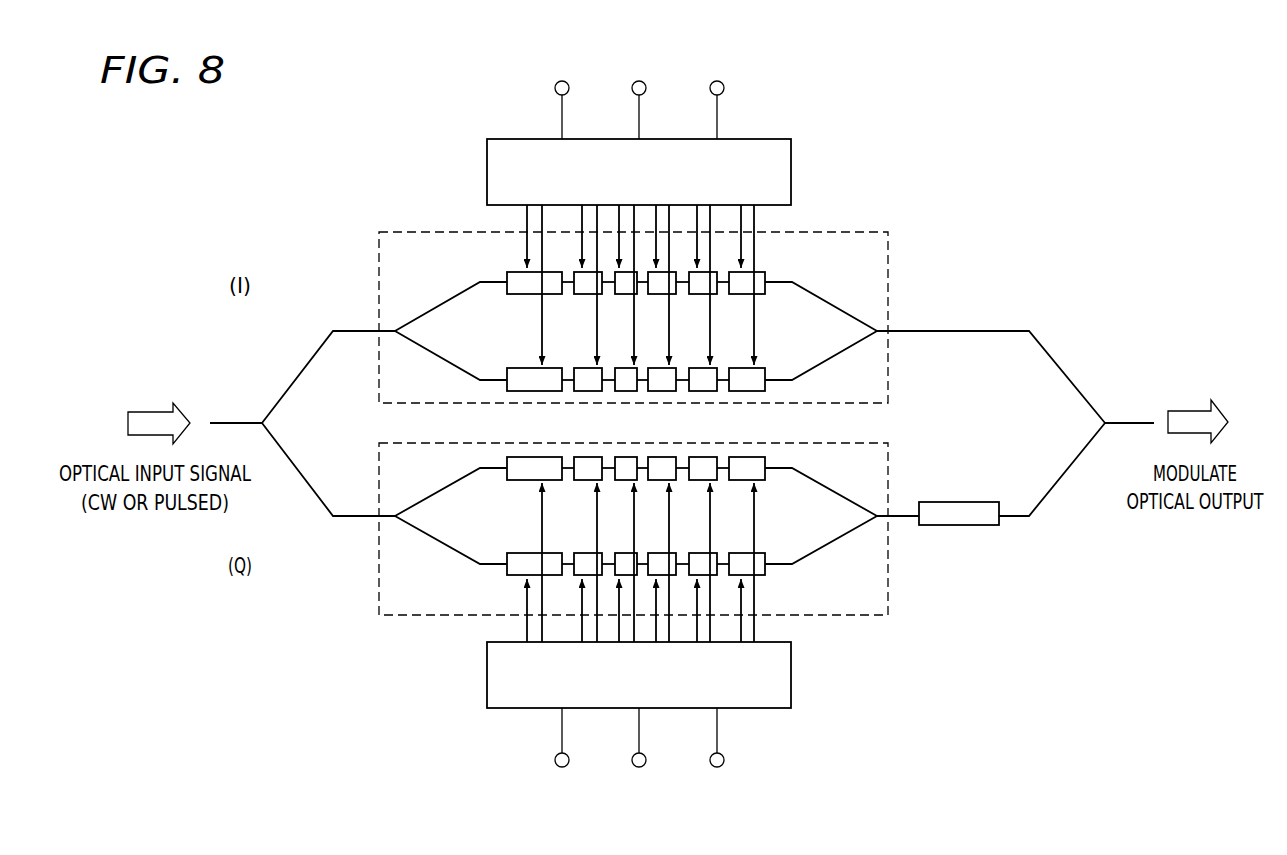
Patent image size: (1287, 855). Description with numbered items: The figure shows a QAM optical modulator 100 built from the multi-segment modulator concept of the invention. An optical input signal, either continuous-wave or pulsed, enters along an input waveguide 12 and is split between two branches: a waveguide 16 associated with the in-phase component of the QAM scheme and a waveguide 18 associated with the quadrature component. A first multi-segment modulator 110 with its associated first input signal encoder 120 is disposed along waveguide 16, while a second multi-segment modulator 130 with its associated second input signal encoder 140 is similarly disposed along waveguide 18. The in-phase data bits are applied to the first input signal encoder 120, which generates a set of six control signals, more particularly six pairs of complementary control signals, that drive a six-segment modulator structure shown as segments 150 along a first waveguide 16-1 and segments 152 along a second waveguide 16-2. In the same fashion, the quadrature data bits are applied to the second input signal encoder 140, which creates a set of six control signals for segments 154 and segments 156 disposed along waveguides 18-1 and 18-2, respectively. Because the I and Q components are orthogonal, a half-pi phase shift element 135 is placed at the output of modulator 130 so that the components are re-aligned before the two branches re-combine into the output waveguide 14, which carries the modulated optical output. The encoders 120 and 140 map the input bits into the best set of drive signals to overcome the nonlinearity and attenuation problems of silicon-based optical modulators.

The QAM optical modulator 100 is at (897, 145).
The optical input waveguide 12 is at (244, 421).
The optical output waveguide 14 is at (1127, 421).
The waveguide 16 is at (316, 352).
The waveguide 18 is at (314, 491).
The first waveguide 16-1 is at (455, 297).
The second waveguide 16-2 is at (440, 357).
The waveguide 18-1 is at (438, 492).
The waveguide 18-2 is at (452, 548).
The first multi-segment modulator 110 is at (843, 232).
The first input signal encoder 120 is at (487, 172).
The second multi-segment modulator 130 is at (843, 615).
The π/2 phase shift element 135 is at (967, 503).
The second input signal encoder 140 is at (487, 673).
The segments 150 is at (768, 276).
The segments 152 is at (767, 371).
The segments 154 is at (767, 481).
The segments 156 is at (767, 576).